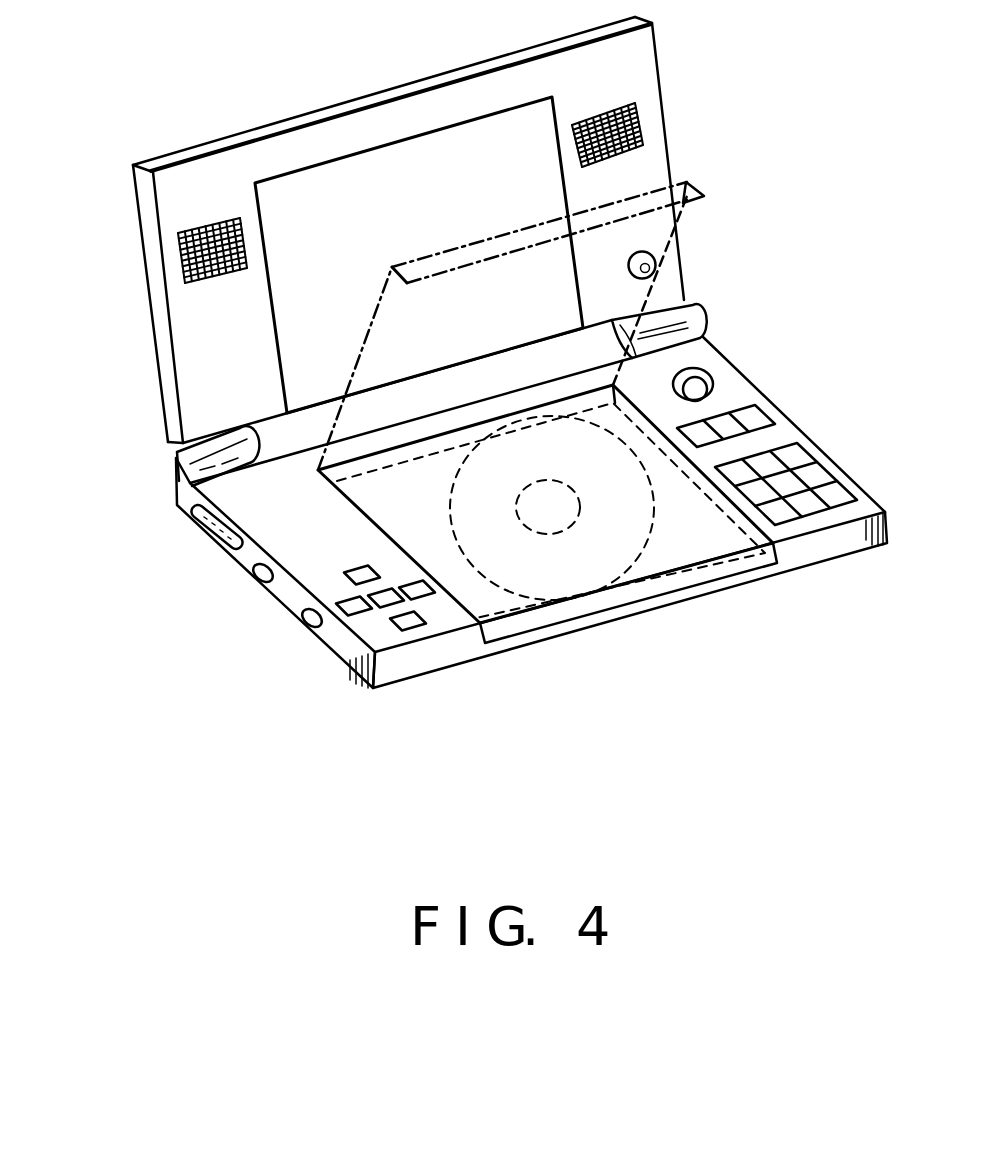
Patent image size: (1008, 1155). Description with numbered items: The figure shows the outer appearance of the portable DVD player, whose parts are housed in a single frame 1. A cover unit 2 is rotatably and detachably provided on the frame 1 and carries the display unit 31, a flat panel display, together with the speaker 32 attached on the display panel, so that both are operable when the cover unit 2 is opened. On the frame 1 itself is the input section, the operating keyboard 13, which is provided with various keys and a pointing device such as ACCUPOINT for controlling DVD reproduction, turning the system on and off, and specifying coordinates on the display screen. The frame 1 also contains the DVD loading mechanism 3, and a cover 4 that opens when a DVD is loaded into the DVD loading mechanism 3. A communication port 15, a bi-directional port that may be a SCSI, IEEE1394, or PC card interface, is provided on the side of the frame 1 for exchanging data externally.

The frame 1 is at (500, 665).
The cover unit 2 is at (216, 138).
The DVD loading mechanism 3 is at (657, 567).
The cover 4 is at (785, 555).
The operating keyboard 13 is at (655, 274).
The communication port 15 is at (215, 545).
The display unit 31 is at (444, 140).
The speaker 32 is at (636, 118).